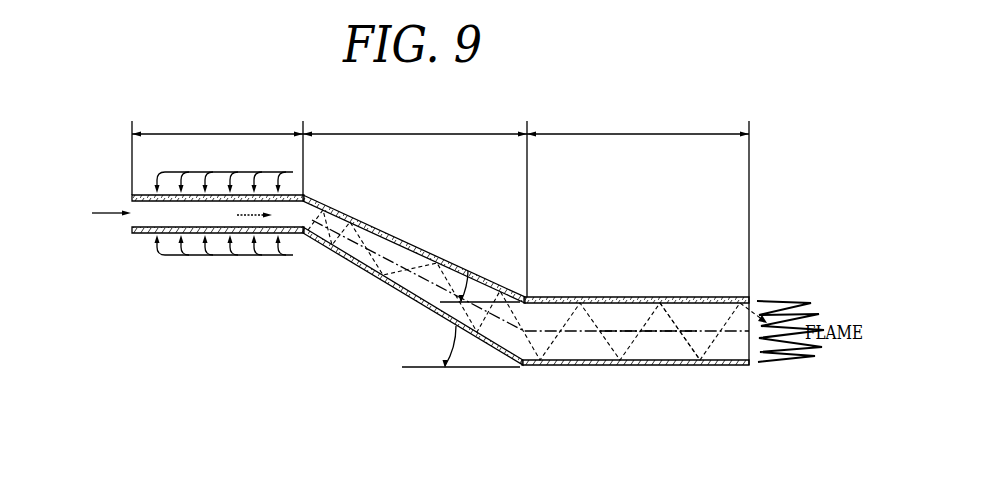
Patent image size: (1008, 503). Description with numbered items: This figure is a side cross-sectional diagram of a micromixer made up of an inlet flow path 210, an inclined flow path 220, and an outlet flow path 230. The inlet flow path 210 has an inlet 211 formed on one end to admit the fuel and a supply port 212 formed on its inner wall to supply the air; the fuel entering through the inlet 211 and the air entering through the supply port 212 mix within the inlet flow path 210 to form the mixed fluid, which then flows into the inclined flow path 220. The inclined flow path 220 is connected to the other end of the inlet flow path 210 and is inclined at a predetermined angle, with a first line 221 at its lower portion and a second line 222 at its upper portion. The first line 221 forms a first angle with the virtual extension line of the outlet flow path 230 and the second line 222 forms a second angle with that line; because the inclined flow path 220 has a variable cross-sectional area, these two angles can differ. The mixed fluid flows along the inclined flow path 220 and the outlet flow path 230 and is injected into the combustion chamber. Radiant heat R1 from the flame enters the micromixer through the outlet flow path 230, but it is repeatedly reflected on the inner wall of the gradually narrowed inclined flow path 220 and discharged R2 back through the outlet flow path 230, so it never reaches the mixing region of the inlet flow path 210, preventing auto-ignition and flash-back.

The inlet flow path 210 is at (185, 202).
The inlet 211 is at (137, 206).
The supply port 212 is at (157, 235).
The inclined flow path 220 is at (414, 238).
The first line 221 is at (373, 278).
The second line 222 is at (392, 237).
The outlet flow path 230 is at (635, 236).
The radiant heat R1 is at (652, 333).
The discharged radiant heat R2 is at (668, 319).